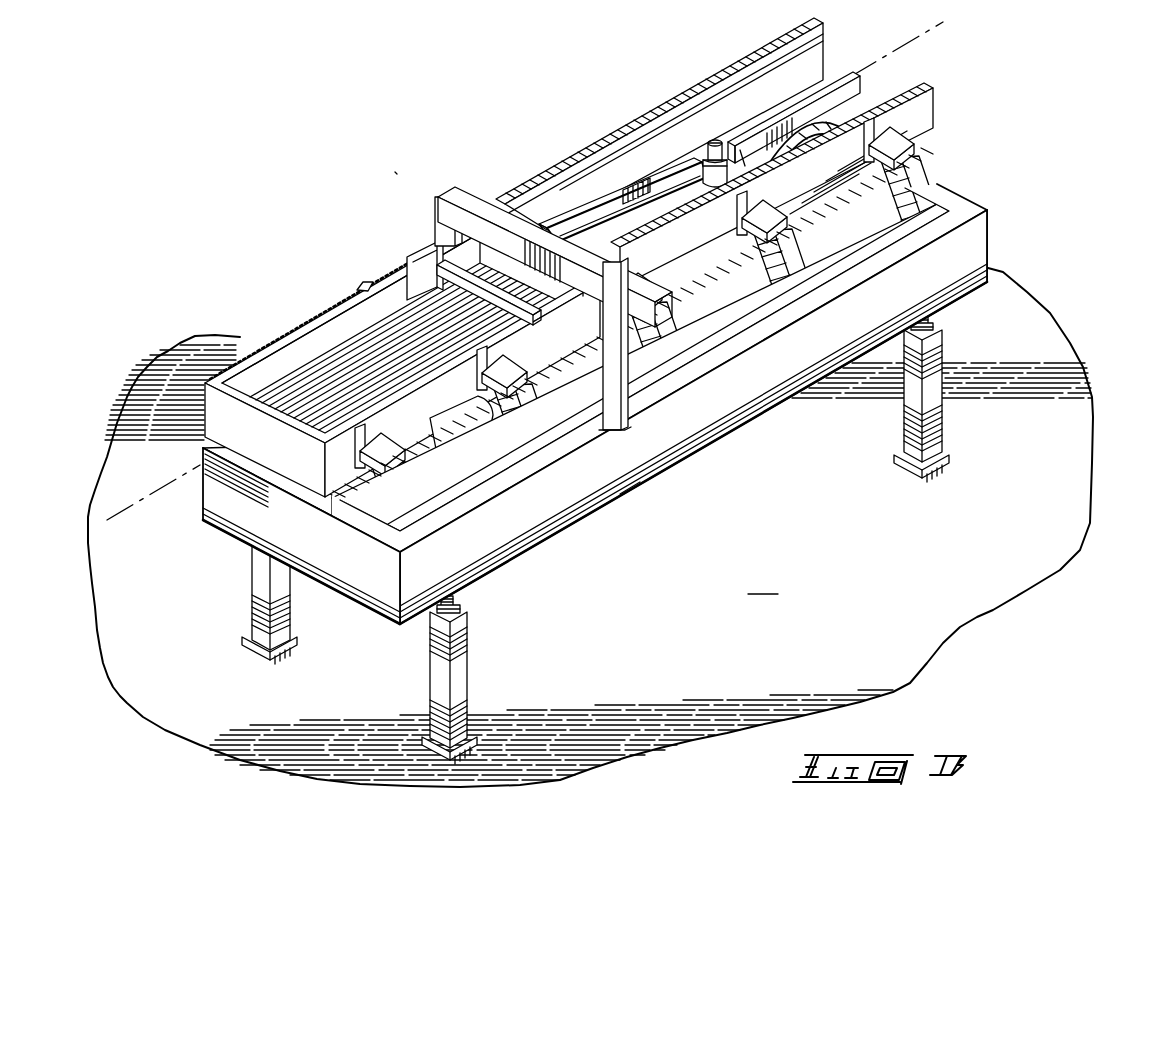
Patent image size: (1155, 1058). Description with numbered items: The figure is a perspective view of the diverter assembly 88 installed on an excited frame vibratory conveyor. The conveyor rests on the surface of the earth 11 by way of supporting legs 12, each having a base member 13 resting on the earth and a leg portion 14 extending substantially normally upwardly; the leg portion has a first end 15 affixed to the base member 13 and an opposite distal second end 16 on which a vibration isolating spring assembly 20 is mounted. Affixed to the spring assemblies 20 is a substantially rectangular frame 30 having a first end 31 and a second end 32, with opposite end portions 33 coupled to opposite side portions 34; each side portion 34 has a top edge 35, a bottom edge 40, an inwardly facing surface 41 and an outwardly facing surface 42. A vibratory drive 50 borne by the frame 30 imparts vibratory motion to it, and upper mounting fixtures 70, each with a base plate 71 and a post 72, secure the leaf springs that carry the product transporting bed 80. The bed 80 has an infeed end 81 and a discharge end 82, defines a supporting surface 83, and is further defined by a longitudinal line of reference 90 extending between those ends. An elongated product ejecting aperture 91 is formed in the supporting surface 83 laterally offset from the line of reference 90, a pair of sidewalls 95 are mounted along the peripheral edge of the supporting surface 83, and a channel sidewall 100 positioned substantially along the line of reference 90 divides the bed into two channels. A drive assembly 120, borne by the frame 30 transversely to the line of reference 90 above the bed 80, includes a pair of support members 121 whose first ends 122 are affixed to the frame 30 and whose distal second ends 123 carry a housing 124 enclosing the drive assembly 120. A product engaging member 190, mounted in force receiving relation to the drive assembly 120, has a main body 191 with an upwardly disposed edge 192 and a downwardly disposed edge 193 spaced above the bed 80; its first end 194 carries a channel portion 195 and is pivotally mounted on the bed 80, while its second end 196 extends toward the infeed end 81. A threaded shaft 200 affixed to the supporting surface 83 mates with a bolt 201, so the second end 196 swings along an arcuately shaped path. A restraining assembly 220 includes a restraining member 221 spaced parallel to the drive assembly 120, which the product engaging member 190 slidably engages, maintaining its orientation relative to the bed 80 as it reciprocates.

The surface of the earth 11 is at (590, 527).
The supporting legs 12 is at (637, 531).
The base member 13 is at (907, 470).
The leg portion 14 is at (629, 539).
The first end 15 is at (943, 433).
The second end 16 is at (943, 353).
The vibration isolating spring assembly 20 is at (934, 318).
The frame 30 is at (557, 441).
The first end 31 is at (316, 557).
The second end 32 is at (962, 194).
The end portions 33 is at (932, 168).
The side portions 34 is at (534, 417).
The top edge 35 is at (834, 290).
The bottom edge 40 is at (630, 497).
The inwardly facing surface 41 is at (712, 356).
The outwardly facing surface 42 is at (490, 541).
The vibratory drive 50 is at (437, 461).
The upper mounting fixtures 70 is at (634, 332).
The base plate 71 is at (355, 449).
The post 72 is at (373, 437).
The product transporting bed 80 is at (402, 355).
The infeed end 81 is at (270, 398).
The discharge end 82 is at (830, 52).
The supporting surface 83 is at (300, 391).
The diverter assembly 88 is at (393, 171).
The longitudinal line of reference 90 is at (933, 27).
The product ejecting aperture 91 is at (826, 122).
The sidewalls 95 is at (725, 100).
The channel sidewall 100 is at (789, 119).
The drive assembly 120 is at (546, 301).
The support members 121 is at (440, 183).
The first end 122 is at (613, 430).
The second end 123 is at (559, 301).
The housing 124 is at (527, 217).
The product engaging member 190 is at (630, 201).
The main body 191 is at (597, 231).
The upwardly disposed edge 192 is at (566, 218).
The downwardly disposed edge 193 is at (692, 206).
The first end 194 is at (690, 103).
The channel portion 195 is at (712, 190).
The second end 196 is at (395, 270).
The threaded shaft 200 is at (689, 124).
The bolt 201 is at (732, 146).
The restraining assembly 220 is at (447, 276).
The restraining member 221 is at (426, 240).